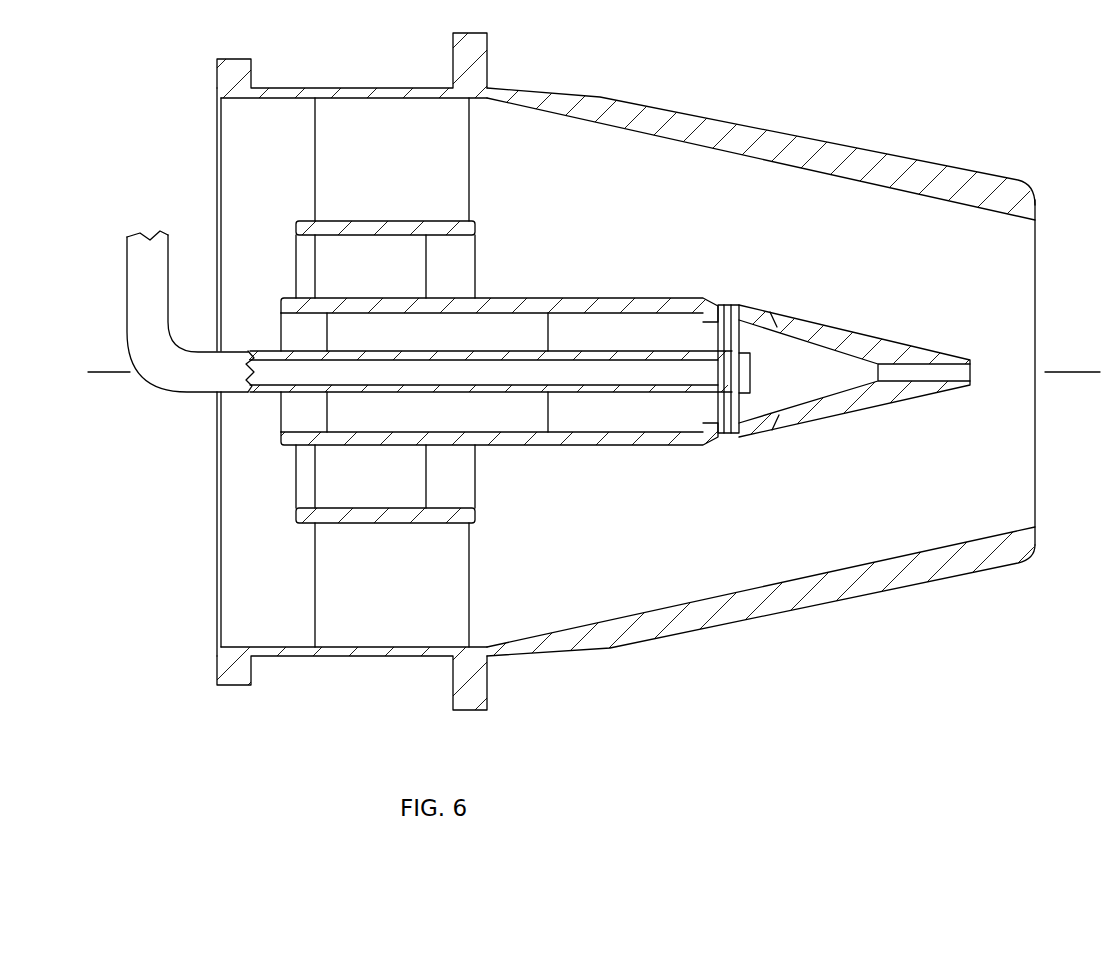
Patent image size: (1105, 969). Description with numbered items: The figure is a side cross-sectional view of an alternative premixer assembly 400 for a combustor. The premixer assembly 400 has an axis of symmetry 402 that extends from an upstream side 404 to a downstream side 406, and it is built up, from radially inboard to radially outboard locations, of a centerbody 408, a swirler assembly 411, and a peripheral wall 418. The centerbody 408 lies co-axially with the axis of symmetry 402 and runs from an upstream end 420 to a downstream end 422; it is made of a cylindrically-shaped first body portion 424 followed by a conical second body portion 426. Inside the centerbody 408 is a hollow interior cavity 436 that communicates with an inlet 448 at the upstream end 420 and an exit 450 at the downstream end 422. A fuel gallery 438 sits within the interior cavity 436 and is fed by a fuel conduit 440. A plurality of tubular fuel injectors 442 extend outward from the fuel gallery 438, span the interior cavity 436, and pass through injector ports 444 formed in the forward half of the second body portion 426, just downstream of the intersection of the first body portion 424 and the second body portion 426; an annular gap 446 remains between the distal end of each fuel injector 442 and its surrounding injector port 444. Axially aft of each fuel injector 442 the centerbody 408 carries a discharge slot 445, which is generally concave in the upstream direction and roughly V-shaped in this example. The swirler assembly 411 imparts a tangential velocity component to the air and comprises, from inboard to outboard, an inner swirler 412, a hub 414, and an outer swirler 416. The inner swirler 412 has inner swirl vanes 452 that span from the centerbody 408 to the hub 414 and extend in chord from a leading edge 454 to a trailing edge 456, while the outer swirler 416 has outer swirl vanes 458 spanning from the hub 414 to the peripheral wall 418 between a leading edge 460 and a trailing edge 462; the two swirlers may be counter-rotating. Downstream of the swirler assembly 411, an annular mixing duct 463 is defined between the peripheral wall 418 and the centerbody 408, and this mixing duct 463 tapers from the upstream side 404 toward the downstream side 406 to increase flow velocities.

The premixer assembly 400 is at (900, 95).
The axis of symmetry 402 is at (594, 351).
The upstream side 404 is at (196, 612).
The downstream side 406 is at (1052, 487).
The centerbody 408 is at (763, 459).
The swirler assembly 411 is at (266, 516).
The inner swirler 412 is at (331, 254).
The hub 414 is at (462, 221).
The outer swirler 416 is at (340, 161).
The peripheral wall 418 is at (765, 130).
The upstream end 420 is at (281, 432).
The downstream end 422 is at (968, 386).
The first body portion 424 is at (637, 298).
The second body portion 426 is at (884, 340).
The interior cavity 436 is at (571, 428).
The fuel gallery 438 is at (648, 355).
The fuel conduit 440 is at (156, 236).
The tubular fuel injector 442 is at (722, 413).
The injector port 444 is at (745, 320).
The discharge slot 445 is at (777, 413).
The annular gap 446 is at (722, 292).
The inlet 448 is at (281, 327).
The exit 450 is at (970, 372).
The inner swirl vane 452 is at (343, 503).
The leading edge 454 is at (315, 475).
The trailing edge 456 is at (428, 492).
The outer swirl vane 458 is at (343, 616).
The leading edge 460 is at (315, 608).
The trailing edge 462 is at (469, 607).
The annular mixing duct 463 is at (838, 231).